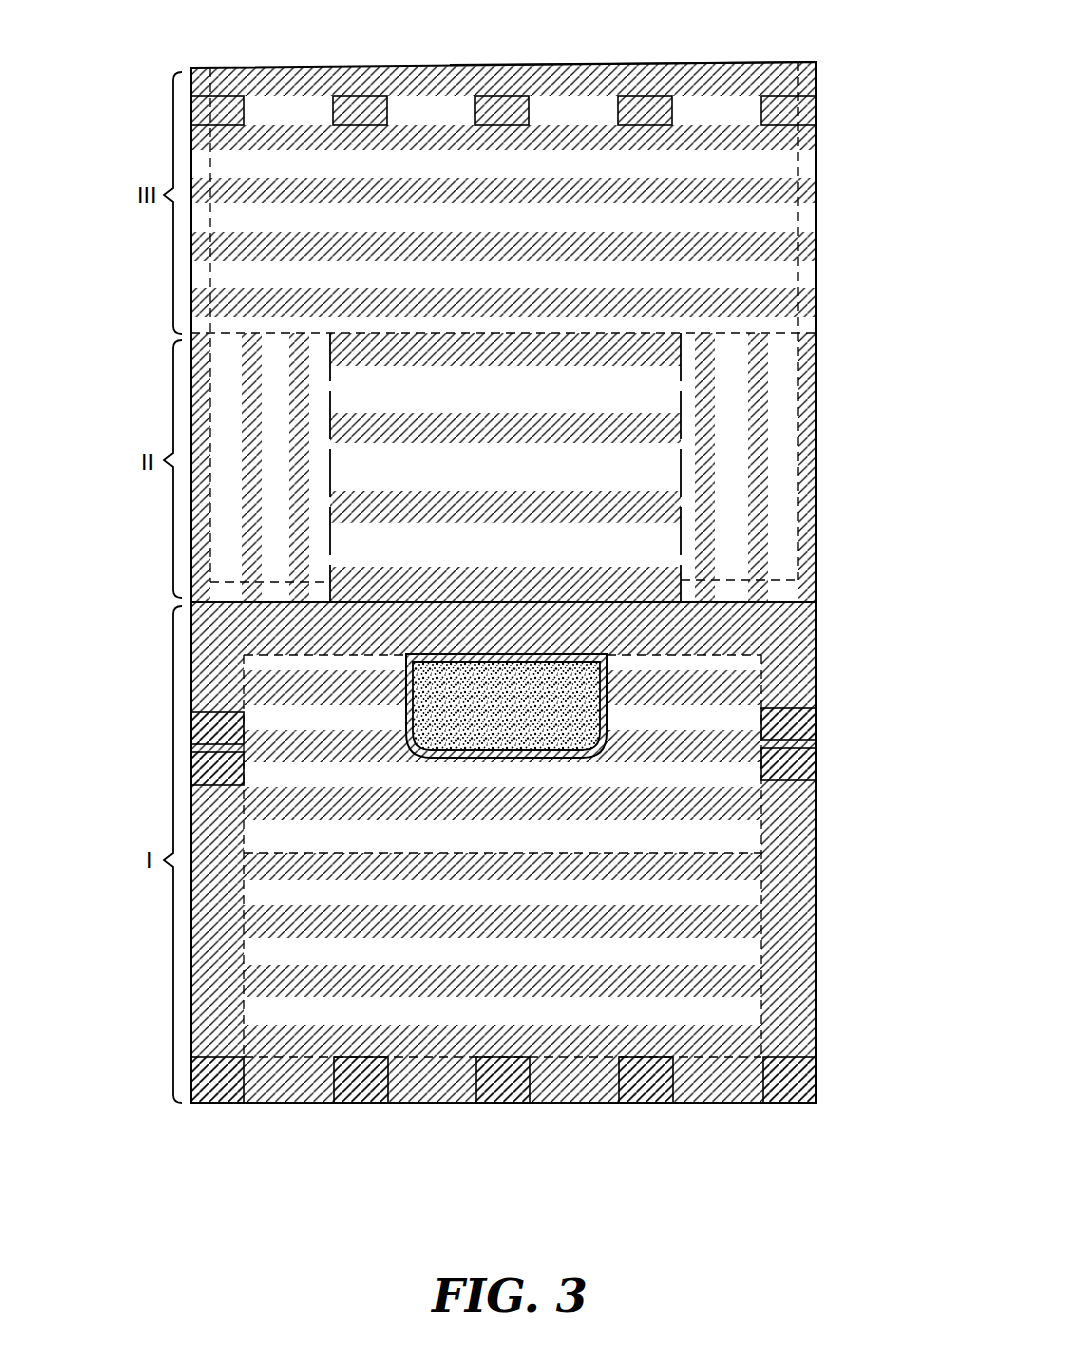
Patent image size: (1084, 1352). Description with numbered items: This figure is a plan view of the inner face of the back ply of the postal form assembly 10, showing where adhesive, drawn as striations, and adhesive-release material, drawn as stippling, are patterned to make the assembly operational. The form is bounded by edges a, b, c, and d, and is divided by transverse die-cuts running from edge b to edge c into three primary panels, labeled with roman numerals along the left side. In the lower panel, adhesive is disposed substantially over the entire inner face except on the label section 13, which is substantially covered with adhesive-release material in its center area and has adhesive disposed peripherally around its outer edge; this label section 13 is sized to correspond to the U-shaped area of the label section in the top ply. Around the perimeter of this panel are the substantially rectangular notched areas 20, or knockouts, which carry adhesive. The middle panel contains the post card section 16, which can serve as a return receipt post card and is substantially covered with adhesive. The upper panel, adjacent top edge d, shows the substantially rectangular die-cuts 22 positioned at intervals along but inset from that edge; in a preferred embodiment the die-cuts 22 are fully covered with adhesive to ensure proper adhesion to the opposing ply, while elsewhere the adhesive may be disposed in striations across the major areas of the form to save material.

The assembly 10 is at (138, 158).
The label section 13 is at (556, 712).
The post card section 16 is at (603, 482).
The notched areas 20 is at (805, 765).
The die-cuts 22 is at (240, 108).
The edge a is at (725, 1105).
The edge b is at (818, 922).
The edge c is at (192, 957).
The top edge d is at (592, 62).